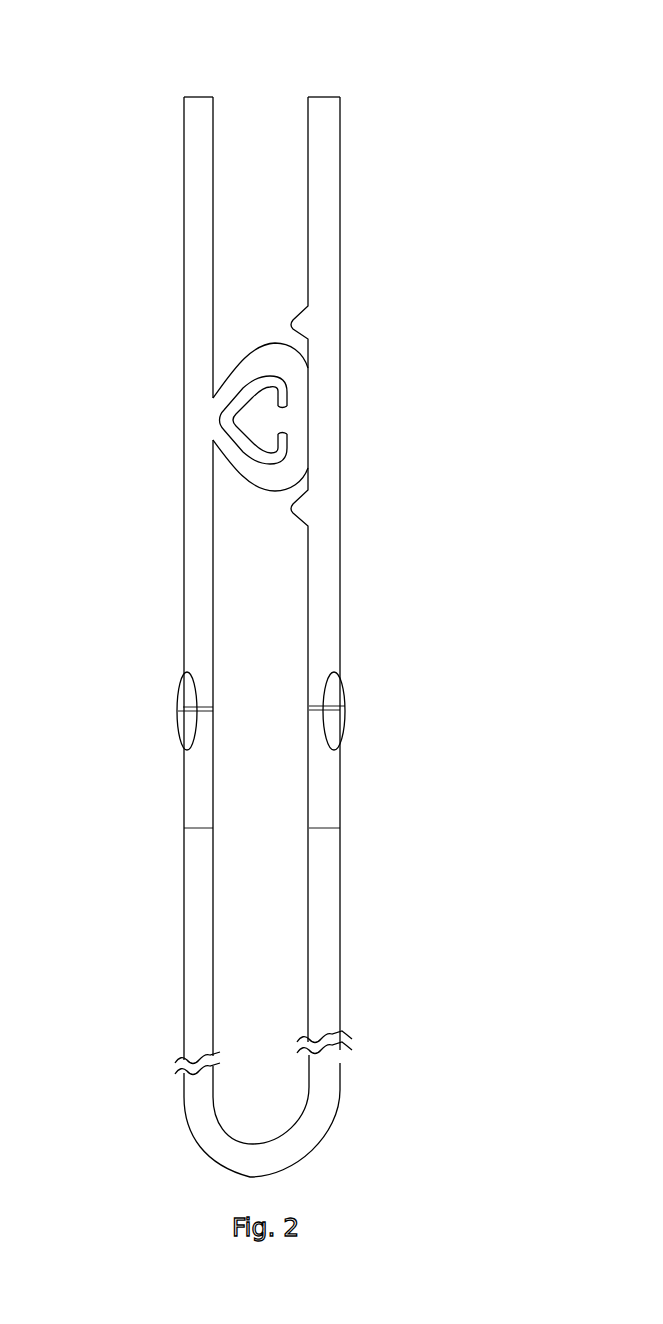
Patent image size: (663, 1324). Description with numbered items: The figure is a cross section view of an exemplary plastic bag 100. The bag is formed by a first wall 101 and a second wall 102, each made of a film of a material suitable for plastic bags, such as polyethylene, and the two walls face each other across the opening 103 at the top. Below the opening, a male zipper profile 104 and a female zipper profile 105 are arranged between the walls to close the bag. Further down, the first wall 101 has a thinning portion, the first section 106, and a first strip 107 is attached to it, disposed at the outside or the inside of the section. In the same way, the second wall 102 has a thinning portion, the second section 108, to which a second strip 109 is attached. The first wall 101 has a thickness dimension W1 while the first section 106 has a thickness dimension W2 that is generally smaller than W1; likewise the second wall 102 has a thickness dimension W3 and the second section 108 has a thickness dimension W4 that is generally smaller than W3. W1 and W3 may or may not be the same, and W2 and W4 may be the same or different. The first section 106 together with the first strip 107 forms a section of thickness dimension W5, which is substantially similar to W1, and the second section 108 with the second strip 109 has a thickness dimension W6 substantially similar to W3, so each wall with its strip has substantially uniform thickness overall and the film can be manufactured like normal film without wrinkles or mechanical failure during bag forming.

The plastic bag 100 is at (299, 595).
The first wall 101 is at (330, 272).
The second wall 102 is at (195, 272).
The opening 103 is at (253, 145).
The male zipper profile 104 is at (258, 414).
The female zipper profile 105 is at (250, 376).
The first section 106 is at (315, 698).
The first strip 107 is at (332, 712).
The second section 108 is at (208, 700).
The second strip 109 is at (186, 713).
The thickness dimension of the first wall W1 is at (323, 828).
The thickness dimension of the first section W2 is at (312, 712).
The thickness dimension of the second wall W3 is at (198, 828).
The thickness dimension of the second section W4 is at (204, 713).
The thickness dimension of the first section with the first strip W5 is at (340, 705).
The thickness dimension of the second section with the second strip W6 is at (185, 703).